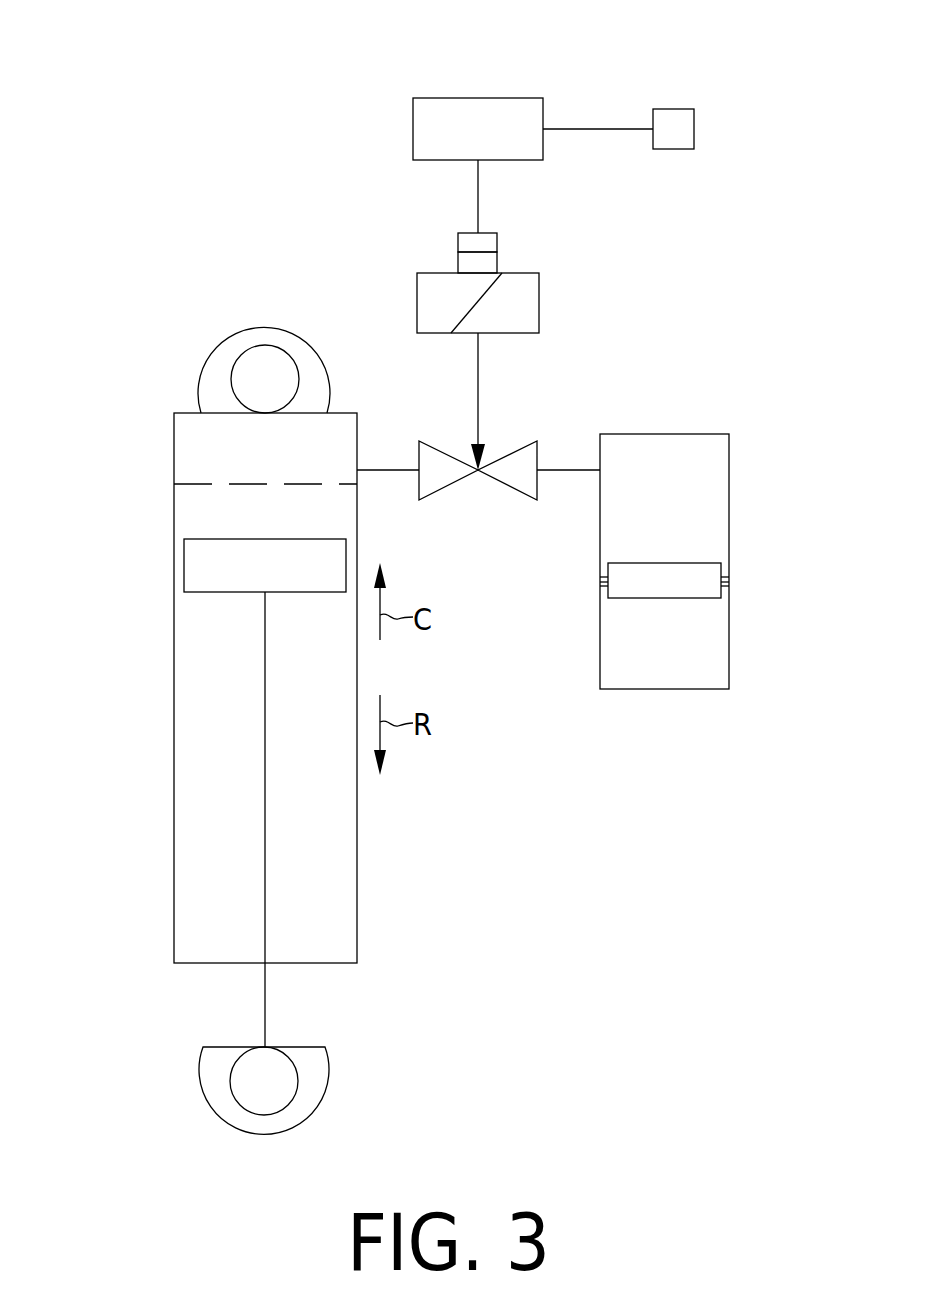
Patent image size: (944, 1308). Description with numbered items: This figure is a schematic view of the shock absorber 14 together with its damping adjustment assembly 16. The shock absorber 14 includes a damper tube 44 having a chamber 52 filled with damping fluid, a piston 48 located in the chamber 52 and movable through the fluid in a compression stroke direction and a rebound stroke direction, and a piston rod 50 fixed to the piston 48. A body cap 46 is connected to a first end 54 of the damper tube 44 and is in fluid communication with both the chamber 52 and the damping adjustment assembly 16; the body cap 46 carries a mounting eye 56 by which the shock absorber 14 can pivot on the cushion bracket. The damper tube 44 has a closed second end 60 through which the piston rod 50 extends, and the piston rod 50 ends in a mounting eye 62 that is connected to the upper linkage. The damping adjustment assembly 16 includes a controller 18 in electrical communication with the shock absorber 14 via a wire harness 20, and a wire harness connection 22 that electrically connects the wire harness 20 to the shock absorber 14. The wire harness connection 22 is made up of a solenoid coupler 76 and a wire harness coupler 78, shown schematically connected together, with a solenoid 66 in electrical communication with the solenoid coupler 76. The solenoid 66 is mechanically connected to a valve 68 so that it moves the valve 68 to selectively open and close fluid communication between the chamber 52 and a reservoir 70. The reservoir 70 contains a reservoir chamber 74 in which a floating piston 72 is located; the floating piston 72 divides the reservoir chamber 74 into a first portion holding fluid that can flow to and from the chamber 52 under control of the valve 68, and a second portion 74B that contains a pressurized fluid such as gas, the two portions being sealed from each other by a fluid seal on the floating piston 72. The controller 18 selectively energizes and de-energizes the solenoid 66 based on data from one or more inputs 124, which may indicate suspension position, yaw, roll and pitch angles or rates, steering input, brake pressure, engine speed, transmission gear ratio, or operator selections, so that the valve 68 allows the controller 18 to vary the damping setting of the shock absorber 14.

The shock absorber 14 is at (118, 900).
The damping adjustment assembly 16 is at (450, 72).
The controller 18 is at (495, 98).
The wire harness 20 is at (478, 185).
The wire harness connection 22 is at (436, 242).
The damper tube 44 is at (174, 796).
The body cap 46 is at (174, 449).
The piston 48 is at (193, 566).
The piston rod 50 is at (265, 1006).
The chamber 52 is at (193, 728).
The first end 54 is at (174, 514).
The mounting eye 56 is at (257, 326).
The second end 60 is at (325, 963).
The mounting eye 62 is at (325, 1085).
The solenoid 66 is at (539, 300).
The valve 68 is at (503, 480).
The reservoir 70 is at (729, 514).
The floating piston 72 is at (662, 574).
The reservoir chamber 74 is at (712, 469).
The second portion 74B is at (712, 644).
The solenoid coupler 76 is at (497, 265).
The wire harness coupler 78 is at (497, 243).
The inputs 124 is at (694, 129).